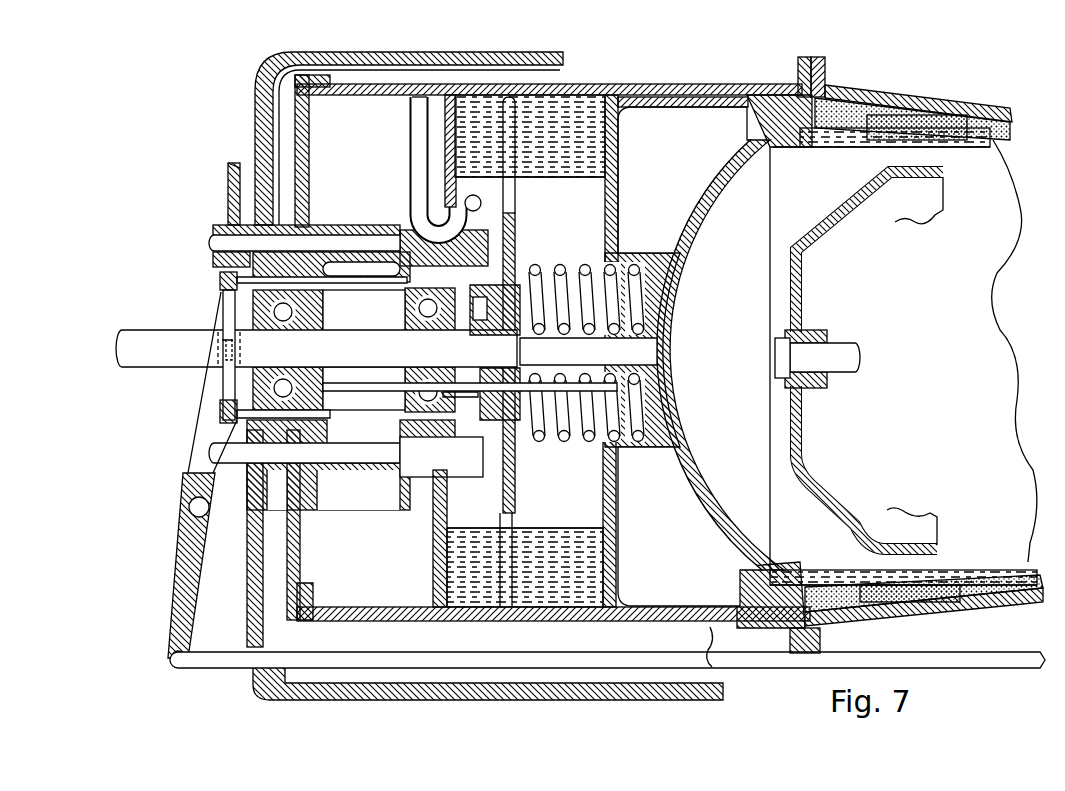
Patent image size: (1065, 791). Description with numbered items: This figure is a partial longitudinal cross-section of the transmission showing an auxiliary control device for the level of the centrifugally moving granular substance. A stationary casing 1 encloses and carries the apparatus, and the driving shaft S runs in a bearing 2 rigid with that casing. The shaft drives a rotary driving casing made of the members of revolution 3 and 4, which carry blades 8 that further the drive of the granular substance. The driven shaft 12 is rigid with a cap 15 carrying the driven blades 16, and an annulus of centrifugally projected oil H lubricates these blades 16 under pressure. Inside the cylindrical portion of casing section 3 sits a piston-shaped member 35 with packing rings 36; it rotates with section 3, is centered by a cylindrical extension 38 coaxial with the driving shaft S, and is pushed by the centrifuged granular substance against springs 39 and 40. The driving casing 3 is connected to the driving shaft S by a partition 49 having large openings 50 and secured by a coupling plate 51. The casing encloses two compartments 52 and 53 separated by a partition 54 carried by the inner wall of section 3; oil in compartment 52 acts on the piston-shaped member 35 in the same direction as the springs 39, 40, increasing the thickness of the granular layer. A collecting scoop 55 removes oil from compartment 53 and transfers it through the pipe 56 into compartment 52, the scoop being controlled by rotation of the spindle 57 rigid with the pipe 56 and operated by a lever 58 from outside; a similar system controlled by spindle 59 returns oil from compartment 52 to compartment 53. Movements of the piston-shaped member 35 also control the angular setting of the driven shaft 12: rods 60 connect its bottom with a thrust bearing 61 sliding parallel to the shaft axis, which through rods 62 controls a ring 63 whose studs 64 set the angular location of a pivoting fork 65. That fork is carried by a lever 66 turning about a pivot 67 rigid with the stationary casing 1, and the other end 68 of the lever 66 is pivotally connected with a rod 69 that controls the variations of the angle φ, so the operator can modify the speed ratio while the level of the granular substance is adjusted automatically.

The stationary casing 1 is at (256, 86).
The bearing 2 is at (273, 378).
The casing section 3 is at (600, 84).
The casing section 4 is at (937, 96).
The blades 8 is at (830, 121).
The driven shaft 12 is at (848, 350).
The cap 15 is at (794, 258).
The blades 16 is at (955, 141).
The piston-shaped member 35 is at (692, 96).
The packing rings 36 is at (797, 94).
The cylindrical extension 38 is at (658, 352).
The spring 39 is at (538, 269).
The spring 40 is at (572, 276).
The partition 49 is at (516, 228).
The openings 50 is at (511, 204).
The coupling plate 51 is at (492, 296).
The compartment 52 is at (593, 214).
The compartment 53 is at (337, 135).
The partition 54 is at (443, 160).
The collecting scoop 55 is at (418, 101).
The pipe 56 is at (478, 200).
The spindle 57 is at (348, 242).
The lever 58 is at (228, 190).
The spindle 59 is at (352, 466).
The rods 60 is at (474, 394).
The thrust bearing 61 is at (401, 392).
The rods 62 is at (338, 416).
The ring 63 is at (228, 311).
The studs 64 is at (217, 351).
The pivoting fork 65 is at (218, 372).
The lever 66 is at (207, 428).
The pivot 67 is at (189, 498).
The end of lever 68 is at (171, 657).
The rod 69 is at (988, 673).
The driving shaft S is at (152, 333).
The annulus of centrifugally projected oil H is at (851, 144).
The gap G is at (996, 142).
The liquid L is at (547, 540).